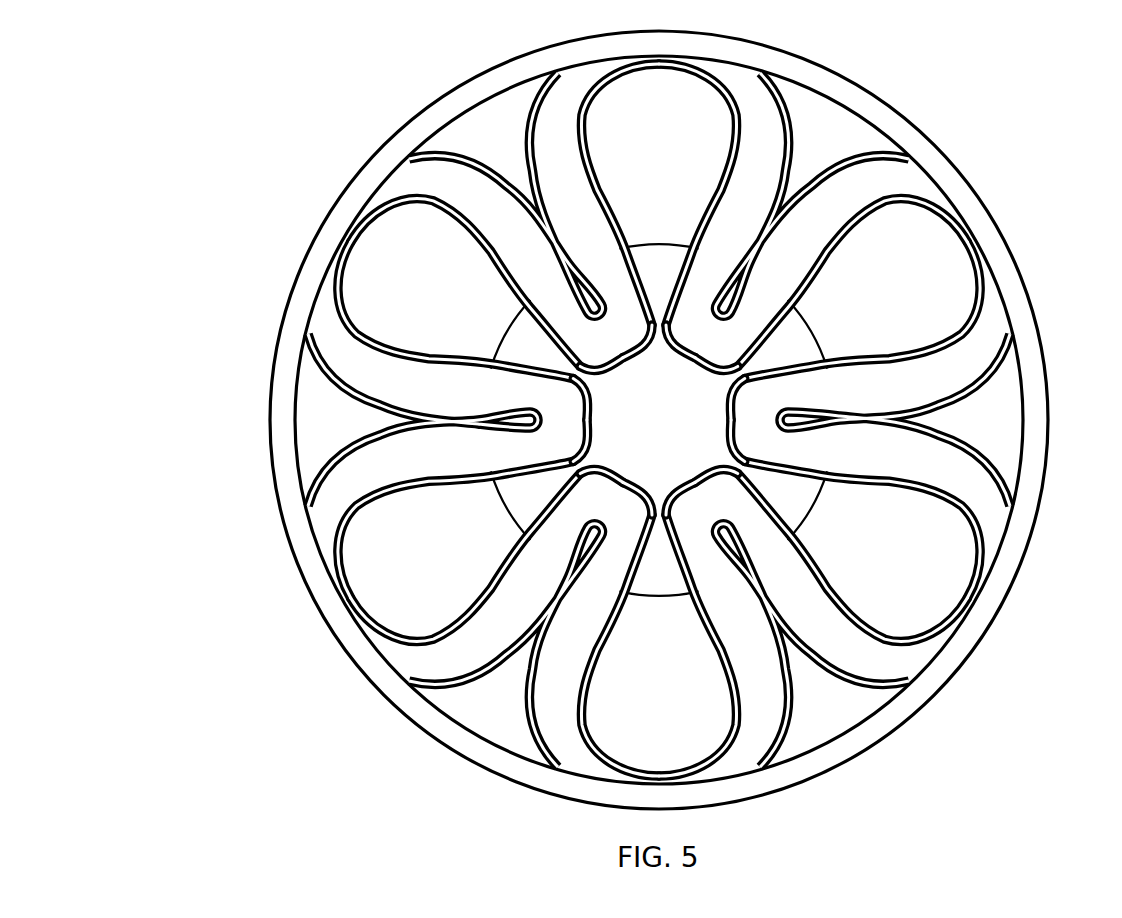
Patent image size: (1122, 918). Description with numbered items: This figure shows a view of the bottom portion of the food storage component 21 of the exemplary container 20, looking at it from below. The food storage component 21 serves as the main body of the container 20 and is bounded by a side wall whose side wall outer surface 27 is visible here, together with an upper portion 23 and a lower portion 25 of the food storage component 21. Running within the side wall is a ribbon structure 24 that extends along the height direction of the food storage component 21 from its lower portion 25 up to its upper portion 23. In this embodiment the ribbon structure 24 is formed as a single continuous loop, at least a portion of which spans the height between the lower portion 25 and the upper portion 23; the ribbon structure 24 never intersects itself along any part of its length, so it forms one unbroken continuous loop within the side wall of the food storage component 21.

The container 20 is at (112, 97).
The food storage component 21 is at (388, 565).
The upper portion 23 is at (828, 128).
The ribbon structure 24 is at (995, 485).
The lower portion 25 is at (768, 405).
The side wall outer surface 27 is at (912, 556).